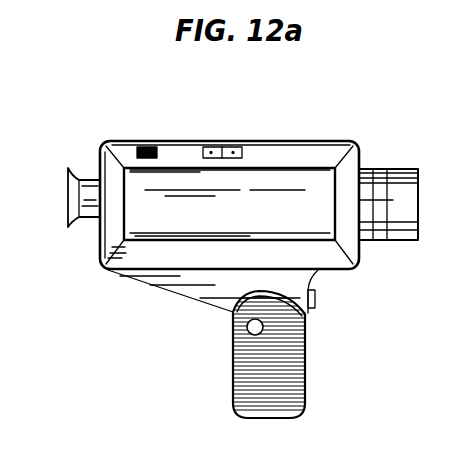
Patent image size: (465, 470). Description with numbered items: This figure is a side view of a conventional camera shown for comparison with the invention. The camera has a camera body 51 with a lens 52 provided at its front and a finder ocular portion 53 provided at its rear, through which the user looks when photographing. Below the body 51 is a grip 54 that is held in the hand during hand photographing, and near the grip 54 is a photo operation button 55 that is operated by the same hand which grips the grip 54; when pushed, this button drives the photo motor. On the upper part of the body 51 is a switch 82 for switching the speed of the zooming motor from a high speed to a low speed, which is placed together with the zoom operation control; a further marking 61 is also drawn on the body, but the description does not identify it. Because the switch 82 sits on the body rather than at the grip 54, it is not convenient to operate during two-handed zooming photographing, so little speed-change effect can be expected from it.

The camera body 51 is at (305, 182).
The lens 52 is at (398, 187).
The finder ocular portion 53 is at (88, 183).
The grip 54 is at (305, 352).
The photo operation button 55 is at (316, 295).
The zoom indicator 61 is at (225, 148).
The switch 82 is at (148, 148).